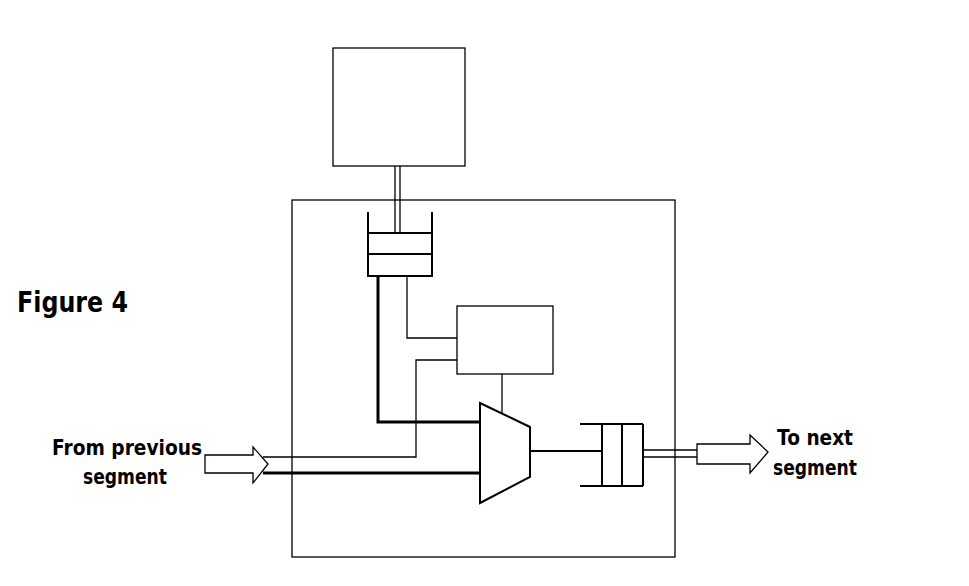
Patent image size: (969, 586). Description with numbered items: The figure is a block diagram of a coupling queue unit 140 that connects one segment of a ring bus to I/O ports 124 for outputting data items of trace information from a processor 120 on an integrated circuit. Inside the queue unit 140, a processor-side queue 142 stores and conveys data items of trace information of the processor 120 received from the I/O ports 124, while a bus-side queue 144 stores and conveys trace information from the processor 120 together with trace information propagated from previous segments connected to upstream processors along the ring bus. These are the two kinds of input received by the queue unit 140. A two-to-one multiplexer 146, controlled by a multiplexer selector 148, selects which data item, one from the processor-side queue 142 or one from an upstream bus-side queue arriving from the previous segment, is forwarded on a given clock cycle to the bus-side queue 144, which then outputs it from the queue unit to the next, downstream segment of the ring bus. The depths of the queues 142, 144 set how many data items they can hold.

The coupling queue unit 140 is at (258, 165).
The processor 120 is at (415, 118).
The I/O ports 124 is at (380, 168).
The processor-side queue 142 is at (433, 239).
The bus-side queue 144 is at (614, 424).
The 2-to-1 multiplexer 146 is at (507, 487).
The multiplexer selector 148 is at (527, 356).